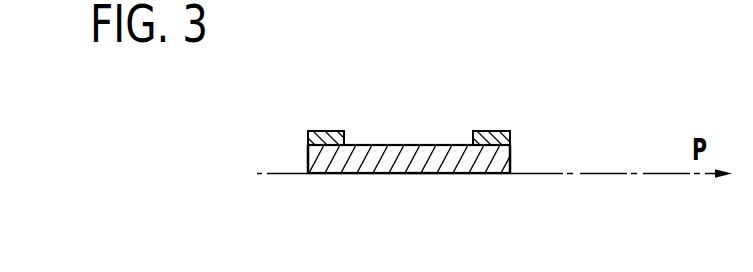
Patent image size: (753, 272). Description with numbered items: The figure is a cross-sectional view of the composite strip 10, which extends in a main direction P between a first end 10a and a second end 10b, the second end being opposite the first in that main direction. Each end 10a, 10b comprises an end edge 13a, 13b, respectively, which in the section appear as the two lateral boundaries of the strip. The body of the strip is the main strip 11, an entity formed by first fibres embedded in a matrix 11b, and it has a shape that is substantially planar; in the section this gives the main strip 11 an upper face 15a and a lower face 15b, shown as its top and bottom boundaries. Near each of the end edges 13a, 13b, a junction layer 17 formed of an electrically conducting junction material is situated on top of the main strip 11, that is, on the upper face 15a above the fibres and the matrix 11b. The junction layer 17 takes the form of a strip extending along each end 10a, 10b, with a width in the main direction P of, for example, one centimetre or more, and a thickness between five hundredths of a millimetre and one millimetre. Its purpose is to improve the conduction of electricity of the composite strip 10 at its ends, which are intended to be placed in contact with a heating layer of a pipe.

The composite strip 10 is at (233, 122).
The first end 10a is at (263, 148).
The second end 10b is at (554, 148).
The main strip 11 is at (430, 131).
The matrix 11b is at (416, 146).
The end edge 13a is at (308, 155).
The end edge 13b is at (511, 155).
The upper face 15a is at (367, 145).
The lower face 15b is at (383, 173).
The junction layer 17 is at (330, 137).